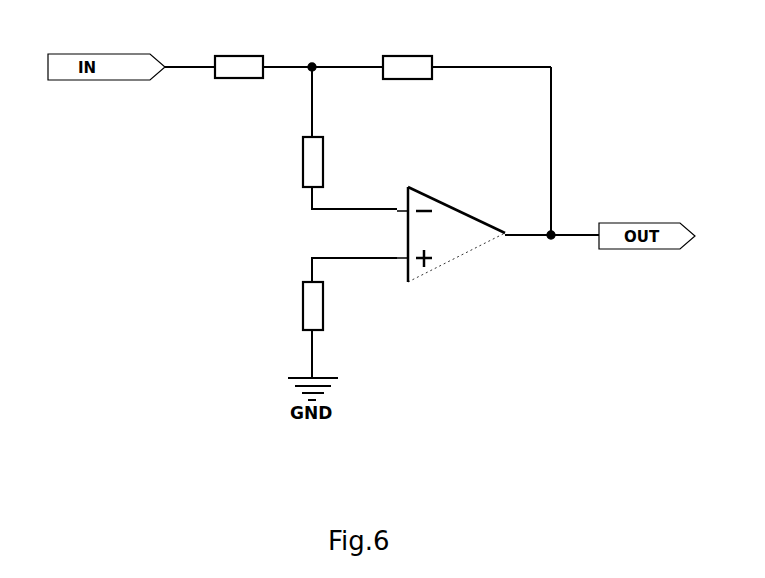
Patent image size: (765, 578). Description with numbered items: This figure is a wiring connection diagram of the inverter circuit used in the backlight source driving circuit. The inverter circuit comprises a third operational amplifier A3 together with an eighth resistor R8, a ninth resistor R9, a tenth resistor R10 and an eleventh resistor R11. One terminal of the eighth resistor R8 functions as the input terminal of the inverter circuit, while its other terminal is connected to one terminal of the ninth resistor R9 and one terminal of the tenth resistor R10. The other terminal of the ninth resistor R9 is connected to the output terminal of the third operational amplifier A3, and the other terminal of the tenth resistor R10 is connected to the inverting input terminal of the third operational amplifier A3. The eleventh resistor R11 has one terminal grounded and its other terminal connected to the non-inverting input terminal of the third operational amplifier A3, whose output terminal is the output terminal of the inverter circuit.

The eighth resistor R8 is at (263, 57).
The ninth resistor R9 is at (467, 57).
The tenth resistor R10 is at (326, 138).
The eleventh resistor R11 is at (326, 318).
The third operational amplifier A3 is at (474, 226).